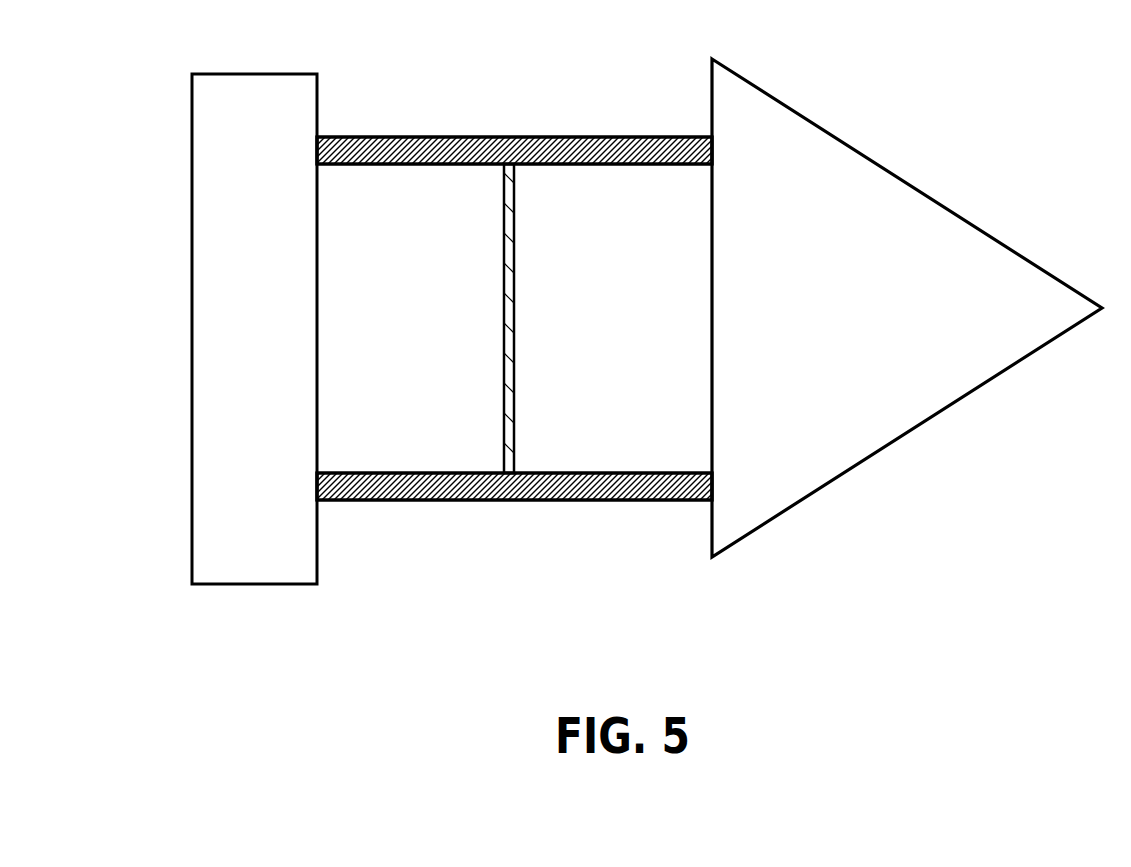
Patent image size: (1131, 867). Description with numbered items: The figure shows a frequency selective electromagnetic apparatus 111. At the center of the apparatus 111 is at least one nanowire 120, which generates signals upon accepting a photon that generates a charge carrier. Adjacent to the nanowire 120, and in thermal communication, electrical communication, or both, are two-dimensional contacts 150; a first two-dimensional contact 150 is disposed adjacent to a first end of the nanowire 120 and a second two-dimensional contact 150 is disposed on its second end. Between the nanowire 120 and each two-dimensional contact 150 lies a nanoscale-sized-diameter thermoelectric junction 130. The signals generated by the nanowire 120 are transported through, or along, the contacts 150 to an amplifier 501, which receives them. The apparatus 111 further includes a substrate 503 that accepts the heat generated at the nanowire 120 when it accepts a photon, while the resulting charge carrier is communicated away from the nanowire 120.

The apparatus 111 is at (486, 106).
The nanowire 120 is at (462, 358).
The nanoscale-sized-diameter thermoelectric junction 130 is at (553, 189).
The 2-dimensional contact 150 is at (600, 150).
The amplifier 501 is at (890, 218).
The substrate 503 is at (222, 294).